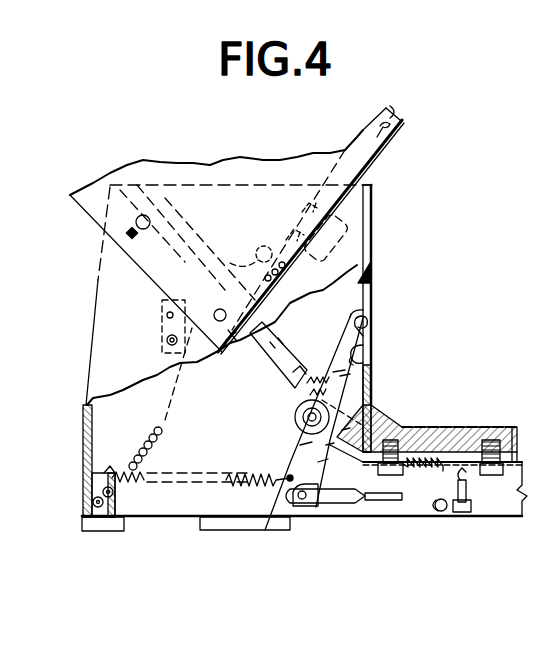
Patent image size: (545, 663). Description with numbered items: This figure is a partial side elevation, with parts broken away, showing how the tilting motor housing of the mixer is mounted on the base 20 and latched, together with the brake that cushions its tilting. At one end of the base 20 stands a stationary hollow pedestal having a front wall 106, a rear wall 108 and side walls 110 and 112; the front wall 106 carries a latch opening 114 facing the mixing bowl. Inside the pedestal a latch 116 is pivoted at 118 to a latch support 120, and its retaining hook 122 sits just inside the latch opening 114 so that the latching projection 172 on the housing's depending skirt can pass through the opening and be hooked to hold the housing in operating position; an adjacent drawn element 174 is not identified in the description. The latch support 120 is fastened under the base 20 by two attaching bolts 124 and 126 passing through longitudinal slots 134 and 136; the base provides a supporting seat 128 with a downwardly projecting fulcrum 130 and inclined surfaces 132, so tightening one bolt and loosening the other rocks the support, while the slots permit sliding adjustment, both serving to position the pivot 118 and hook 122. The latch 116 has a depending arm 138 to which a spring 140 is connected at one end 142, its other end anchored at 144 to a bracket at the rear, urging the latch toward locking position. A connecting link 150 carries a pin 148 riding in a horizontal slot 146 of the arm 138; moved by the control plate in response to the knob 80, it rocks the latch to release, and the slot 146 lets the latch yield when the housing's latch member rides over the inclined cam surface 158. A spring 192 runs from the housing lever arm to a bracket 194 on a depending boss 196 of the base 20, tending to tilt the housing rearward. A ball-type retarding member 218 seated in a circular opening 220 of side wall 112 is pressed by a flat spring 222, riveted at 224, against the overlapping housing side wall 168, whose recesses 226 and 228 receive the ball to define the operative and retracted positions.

The base 20 is at (408, 427).
The knob 80 is at (0, 370).
The front wall 106 is at (371, 277).
The rear wall 108 is at (85, 442).
The side wall 110 is at (87, 468).
The side wall 112 is at (107, 383).
The latch opening 114 is at (372, 296).
The latch 116 is at (352, 320).
The pivot 118 is at (294, 417).
The latch support 120 is at (372, 407).
The retaining hook 122 is at (372, 358).
The attaching bolt 124 is at (389, 476).
The attaching bolt 126 is at (500, 475).
The supporting seat 128 is at (423, 430).
The fulcrum 130 is at (473, 430).
The inclined surfaces 132 is at (510, 427).
The longitudinal slot 134 is at (380, 460).
The longitudinal slot 136 is at (481, 475).
The depending arm 138 is at (300, 437).
The spring 140 is at (270, 483).
The spring end 142 is at (288, 476).
The spring connection 144 is at (88, 482).
The horizontal slot 146 is at (295, 506).
The pin 148 is at (268, 522).
The connecting link 150 is at (365, 503).
The inclined cam surface 158 is at (365, 330).
The side wall 168 is at (142, 255).
The latching projection 172 is at (388, 147).
The roller 174 is at (137, 219).
The spring 192 is at (303, 391).
The bracket 194 is at (437, 510).
The depending boss 196 is at (455, 512).
The retarding member 218 is at (167, 342).
The circular opening 220 is at (166, 352).
The flat spring 222 is at (162, 330).
The rivet 224 is at (167, 314).
The recess 226 is at (220, 309).
The recess 228 is at (267, 248).